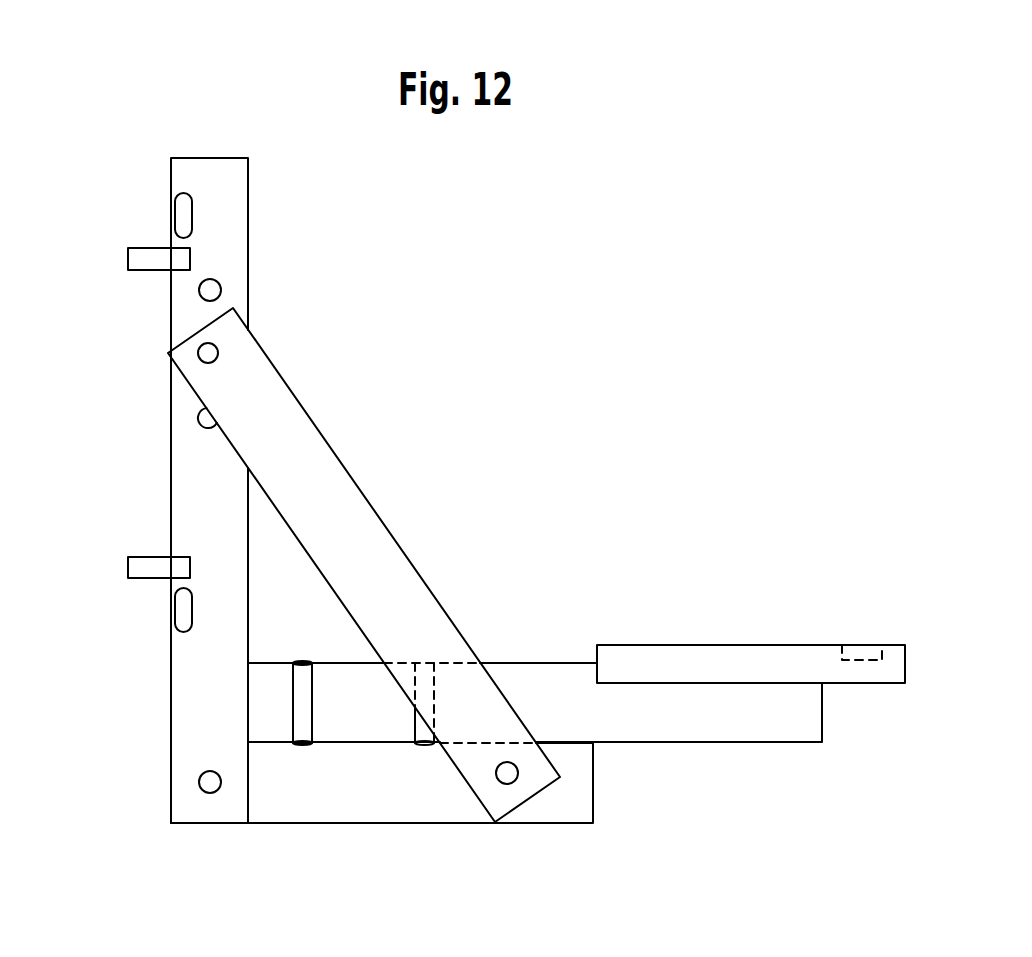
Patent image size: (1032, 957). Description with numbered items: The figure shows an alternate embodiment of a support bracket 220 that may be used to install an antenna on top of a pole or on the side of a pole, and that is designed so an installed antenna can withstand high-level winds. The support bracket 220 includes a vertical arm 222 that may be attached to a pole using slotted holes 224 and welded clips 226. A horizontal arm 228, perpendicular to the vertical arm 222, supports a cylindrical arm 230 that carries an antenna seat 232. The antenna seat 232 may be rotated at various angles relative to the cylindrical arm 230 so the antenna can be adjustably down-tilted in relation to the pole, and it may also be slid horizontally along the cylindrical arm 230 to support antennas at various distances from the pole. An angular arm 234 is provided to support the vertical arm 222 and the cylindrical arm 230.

The support bracket 220 is at (531, 287).
The vertical arm 222 is at (208, 158).
The slotted holes 224 is at (175, 207).
The welded clips 226 is at (162, 270).
The horizontal arm 228 is at (397, 823).
The cylindrical arm 230 is at (735, 742).
The antenna seat 232 is at (703, 645).
The angular arm 234 is at (377, 510).